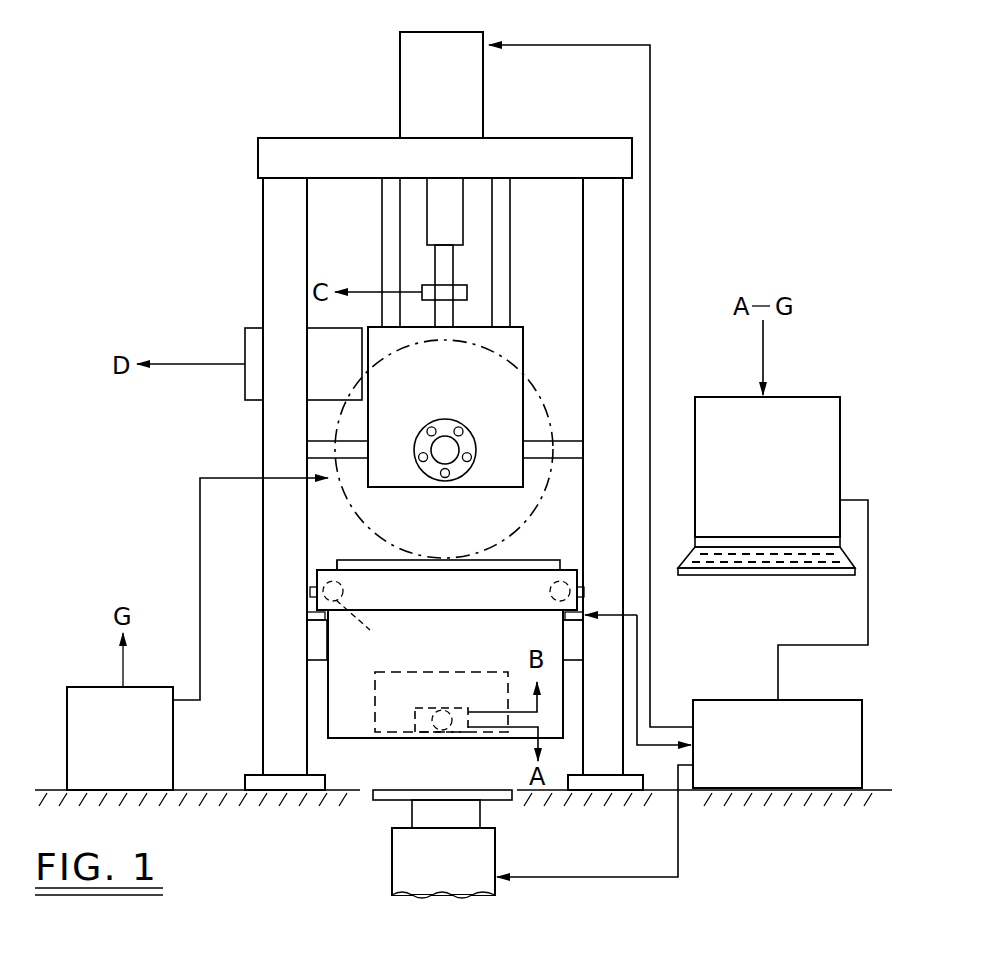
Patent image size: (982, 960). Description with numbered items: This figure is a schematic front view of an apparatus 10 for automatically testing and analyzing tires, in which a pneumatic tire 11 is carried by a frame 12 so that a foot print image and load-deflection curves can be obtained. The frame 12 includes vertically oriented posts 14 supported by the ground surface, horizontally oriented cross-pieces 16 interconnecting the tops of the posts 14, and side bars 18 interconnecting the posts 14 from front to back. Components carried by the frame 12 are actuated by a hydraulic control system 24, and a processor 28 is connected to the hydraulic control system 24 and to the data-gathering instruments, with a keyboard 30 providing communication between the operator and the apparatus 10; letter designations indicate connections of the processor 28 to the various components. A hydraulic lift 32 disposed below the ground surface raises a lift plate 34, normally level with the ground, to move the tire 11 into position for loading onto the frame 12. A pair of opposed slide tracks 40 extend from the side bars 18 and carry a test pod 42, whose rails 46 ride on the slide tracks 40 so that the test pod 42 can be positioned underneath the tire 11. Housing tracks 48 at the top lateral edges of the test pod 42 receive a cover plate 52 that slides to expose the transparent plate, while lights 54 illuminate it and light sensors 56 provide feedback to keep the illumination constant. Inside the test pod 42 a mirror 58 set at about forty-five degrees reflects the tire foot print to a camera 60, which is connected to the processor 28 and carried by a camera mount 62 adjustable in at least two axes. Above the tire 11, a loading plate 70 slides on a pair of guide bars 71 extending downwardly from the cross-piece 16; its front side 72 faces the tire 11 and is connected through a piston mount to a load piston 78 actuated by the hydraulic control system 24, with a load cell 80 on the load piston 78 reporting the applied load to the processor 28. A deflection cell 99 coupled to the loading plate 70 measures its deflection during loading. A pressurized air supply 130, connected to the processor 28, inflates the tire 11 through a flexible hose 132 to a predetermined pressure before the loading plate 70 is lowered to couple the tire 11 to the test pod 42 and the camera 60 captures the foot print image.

The apparatus 10 is at (240, 85).
The frame 12 is at (258, 232).
The posts 14 is at (263, 280).
The cross-pieces 16 is at (357, 138).
The guide bars 71 is at (382, 210).
The load piston 78 is at (453, 272).
The load cell 80 is at (467, 292).
The front side 72 is at (508, 343).
The loading plate 70 is at (527, 357).
The pneumatic tire 11 is at (337, 428).
The deflection cell 99 is at (245, 330).
The flexible hose 132 is at (200, 542).
The pressurized air supply 130 is at (144, 756).
The housing tracks 48 is at (343, 560).
The cover plate 52 is at (444, 558).
The rails 46 is at (317, 574).
The light sensors 56 is at (310, 592).
The lights 54 is at (370, 623).
The slide tracks 40 is at (307, 612).
The side bars 18 is at (316, 660).
The test pod 42 is at (328, 712).
The mirror 58 is at (475, 672).
The camera 60 is at (447, 732).
The camera mount 62 is at (415, 713).
The lift plate 34 is at (370, 802).
The hydraulic lift 32 is at (462, 875).
The hydraulic control system 24 is at (820, 700).
The processor 28 is at (784, 487).
The keyboard 30 is at (767, 575).